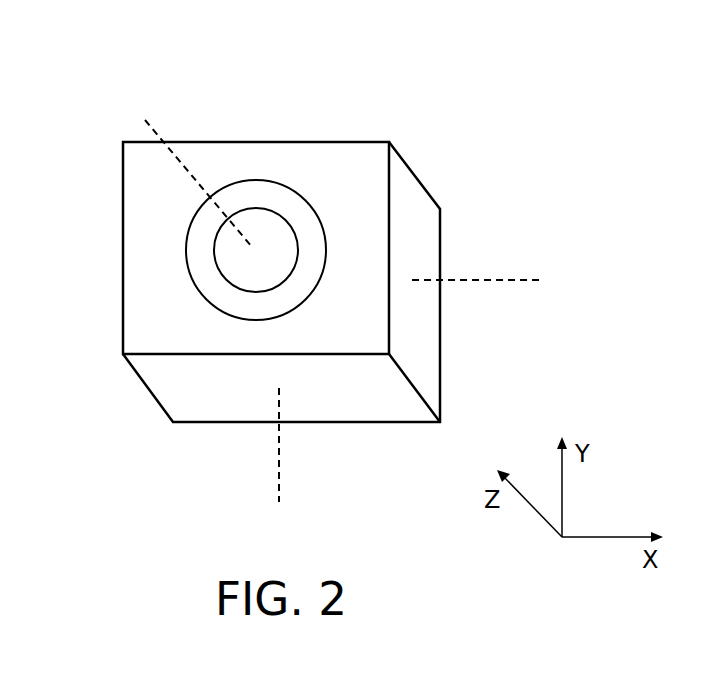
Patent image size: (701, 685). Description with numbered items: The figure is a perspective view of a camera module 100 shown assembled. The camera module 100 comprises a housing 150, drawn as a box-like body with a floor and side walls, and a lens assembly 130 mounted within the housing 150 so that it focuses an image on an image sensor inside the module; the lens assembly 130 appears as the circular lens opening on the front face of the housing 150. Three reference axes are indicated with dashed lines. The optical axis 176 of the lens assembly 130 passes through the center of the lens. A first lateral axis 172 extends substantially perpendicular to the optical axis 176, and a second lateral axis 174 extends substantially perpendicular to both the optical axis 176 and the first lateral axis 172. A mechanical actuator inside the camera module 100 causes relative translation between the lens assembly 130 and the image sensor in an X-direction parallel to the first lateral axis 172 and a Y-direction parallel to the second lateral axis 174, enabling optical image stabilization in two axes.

The camera module 100 is at (361, 81).
The lens assembly 130 is at (193, 233).
The housing 150 is at (180, 383).
The first lateral axis 172 is at (477, 280).
The second lateral axis 174 is at (281, 467).
The optical axis 176 is at (155, 132).